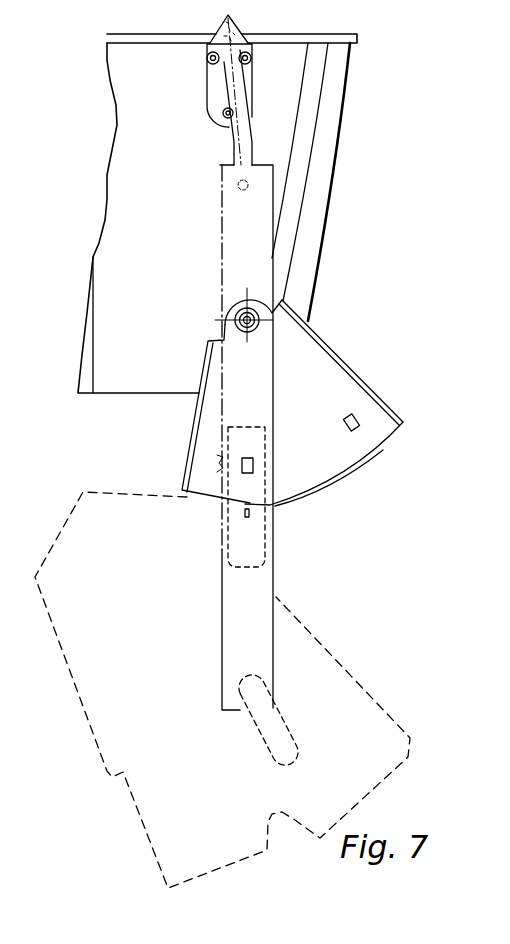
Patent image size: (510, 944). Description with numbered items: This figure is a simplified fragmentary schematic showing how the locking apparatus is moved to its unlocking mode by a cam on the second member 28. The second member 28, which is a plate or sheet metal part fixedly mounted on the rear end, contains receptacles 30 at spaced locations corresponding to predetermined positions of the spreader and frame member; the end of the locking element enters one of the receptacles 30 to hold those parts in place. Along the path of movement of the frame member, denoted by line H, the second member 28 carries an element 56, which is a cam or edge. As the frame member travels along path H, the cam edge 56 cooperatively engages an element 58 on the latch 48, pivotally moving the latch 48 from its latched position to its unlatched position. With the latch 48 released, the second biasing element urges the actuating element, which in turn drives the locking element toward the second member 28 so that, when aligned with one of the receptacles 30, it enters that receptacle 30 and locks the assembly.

The second member 28 is at (403, 420).
The receptacles 30 is at (357, 414).
The latch 48 is at (246, 516).
The element (cam or edge) 56 is at (312, 503).
The element on latch 58 is at (248, 505).
The path of movement of frame member H is at (372, 460).